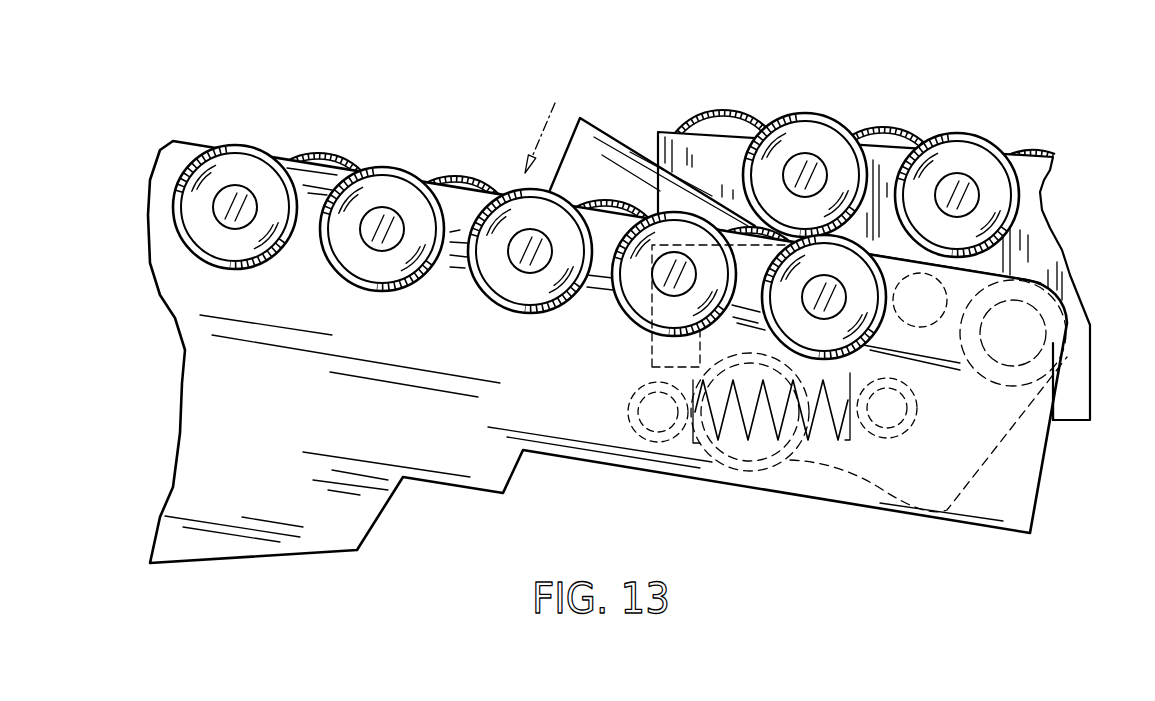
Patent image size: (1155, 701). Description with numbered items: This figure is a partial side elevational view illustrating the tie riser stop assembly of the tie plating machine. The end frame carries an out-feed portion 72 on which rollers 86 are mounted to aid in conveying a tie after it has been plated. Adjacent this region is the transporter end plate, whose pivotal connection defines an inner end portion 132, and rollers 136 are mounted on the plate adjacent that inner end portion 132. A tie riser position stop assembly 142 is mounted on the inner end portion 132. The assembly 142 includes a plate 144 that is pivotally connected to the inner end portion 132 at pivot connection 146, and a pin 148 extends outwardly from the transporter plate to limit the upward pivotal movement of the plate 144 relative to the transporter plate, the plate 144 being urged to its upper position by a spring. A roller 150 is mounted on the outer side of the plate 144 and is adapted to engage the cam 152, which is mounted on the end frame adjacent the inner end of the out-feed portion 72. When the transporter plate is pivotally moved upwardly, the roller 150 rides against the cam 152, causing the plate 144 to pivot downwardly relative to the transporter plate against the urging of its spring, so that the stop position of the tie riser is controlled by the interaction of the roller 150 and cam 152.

The out-feed portion 72 is at (1040, 178).
The rollers 86 is at (823, 135).
The inner end portion 132 is at (1005, 477).
The rollers 136 is at (808, 267).
The tie riser position stop assembly 142 is at (580, 153).
The plate 144 is at (615, 177).
The pivot connection 146 is at (1030, 337).
The pin 148 is at (940, 295).
The roller 150 is at (728, 467).
The cam 152 is at (653, 350).